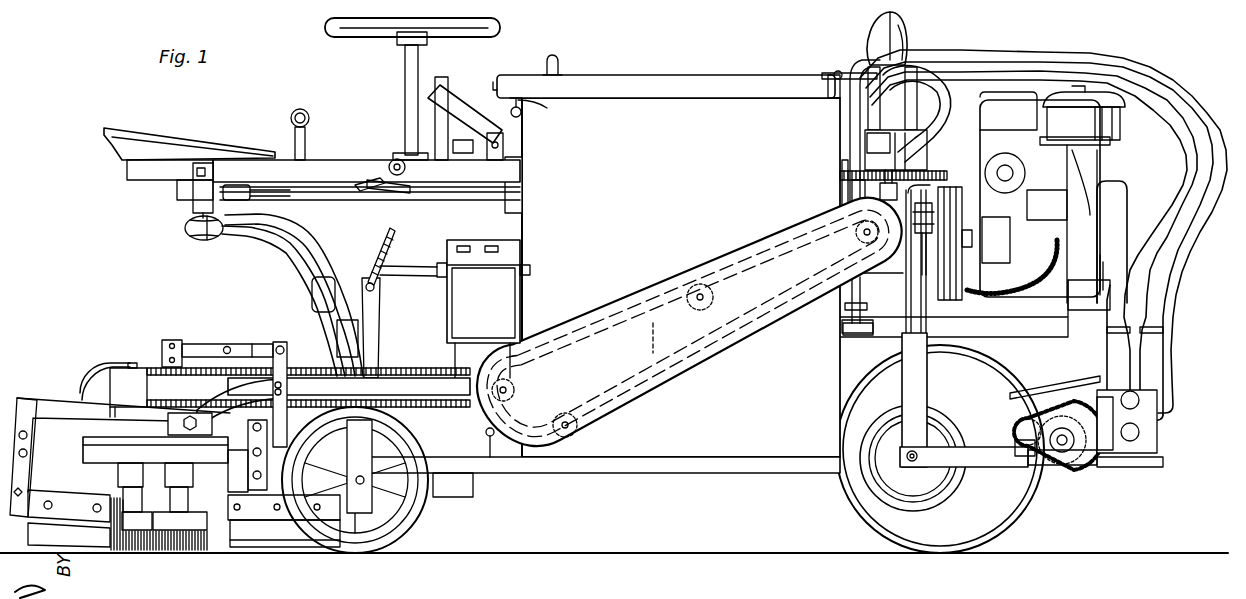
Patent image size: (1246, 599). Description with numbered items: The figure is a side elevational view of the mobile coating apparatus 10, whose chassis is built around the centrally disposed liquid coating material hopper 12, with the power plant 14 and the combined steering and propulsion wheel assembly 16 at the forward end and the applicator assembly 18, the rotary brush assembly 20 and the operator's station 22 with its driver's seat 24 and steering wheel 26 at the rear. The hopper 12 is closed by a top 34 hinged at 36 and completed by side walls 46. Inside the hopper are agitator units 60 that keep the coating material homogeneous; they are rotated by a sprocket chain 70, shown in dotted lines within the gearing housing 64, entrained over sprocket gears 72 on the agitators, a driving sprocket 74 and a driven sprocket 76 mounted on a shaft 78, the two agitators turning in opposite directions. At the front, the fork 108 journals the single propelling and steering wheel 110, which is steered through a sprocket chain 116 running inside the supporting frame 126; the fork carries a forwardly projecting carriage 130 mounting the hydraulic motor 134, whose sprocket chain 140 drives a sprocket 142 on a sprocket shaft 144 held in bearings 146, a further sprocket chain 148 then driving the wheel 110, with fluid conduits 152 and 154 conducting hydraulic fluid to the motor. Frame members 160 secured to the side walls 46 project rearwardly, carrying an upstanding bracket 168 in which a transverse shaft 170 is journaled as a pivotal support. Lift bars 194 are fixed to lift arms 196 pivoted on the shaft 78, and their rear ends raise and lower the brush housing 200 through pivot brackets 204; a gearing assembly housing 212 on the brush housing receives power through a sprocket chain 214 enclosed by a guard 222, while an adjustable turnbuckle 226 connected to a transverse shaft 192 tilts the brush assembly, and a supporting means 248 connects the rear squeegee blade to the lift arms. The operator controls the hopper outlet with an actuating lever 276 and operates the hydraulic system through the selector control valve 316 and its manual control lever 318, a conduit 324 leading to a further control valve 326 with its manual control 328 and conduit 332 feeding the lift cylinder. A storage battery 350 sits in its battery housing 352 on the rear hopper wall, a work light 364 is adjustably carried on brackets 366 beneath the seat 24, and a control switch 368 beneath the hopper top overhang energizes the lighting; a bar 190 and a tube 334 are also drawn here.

The apparatus 10 is at (735, 72).
The liquid coating material hopper 12 is at (681, 275).
The power plant 14 is at (1106, 171).
The combined steering and propulsion wheel assembly 16 is at (957, 374).
The applicator assembly 18 is at (330, 553).
The rotary brush assembly 20 is at (201, 551).
The operator's station 22 is at (348, 158).
The driver's seat 24 is at (148, 150).
The steering wheel 26 is at (370, 25).
The top or closure 34 is at (590, 88).
The hinge 36 is at (836, 71).
The side walls 46 is at (655, 117).
The agitator units 60 is at (697, 280).
The gearing housing 64 is at (689, 322).
The sprocket chain 70 is at (644, 348).
The sprocket gears 72 is at (711, 290).
The driving sprocket 74 is at (858, 227).
The driven sprocket 76 is at (507, 380).
The shaft 78 is at (513, 393).
The fork 108 is at (923, 392).
The propelling and steering wheel 110 is at (837, 488).
The sprocket chain 116 is at (962, 162).
The supporting frame 126 is at (163, 170).
The carriage 130 is at (993, 455).
The hydraulic motor 134 is at (1147, 427).
The sprocket chain 140 is at (1085, 397).
The sprocket 142 is at (1060, 412).
The sprocket shaft 144 is at (1062, 442).
The bearings 146 is at (1017, 443).
The sprocket chain 148 is at (1027, 418).
The fluid conduit 152 is at (1130, 267).
The fluid conduit 154 is at (1160, 293).
The frame members 160 is at (527, 460).
The upstanding bracket 168 is at (492, 443).
The transverse shaft 170 is at (487, 436).
The brush support bar 190 is at (280, 380).
The transverse shaft 192 is at (283, 350).
The lift bars 194 is at (277, 367).
The lift arms 196 is at (383, 390).
The brush housing 200 is at (100, 452).
The pivot brackets 204 is at (203, 428).
The gearing assembly housing 212 is at (123, 372).
The sprocket chain 214 is at (203, 367).
The shield or guard enclosure 222 is at (77, 392).
The adjustable turnbuckle 226 is at (228, 350).
The supporting means 248 is at (248, 452).
The actuating lever 276 is at (467, 117).
The control valve 316 is at (880, 143).
The manual control lever 318 is at (445, 77).
The conduit 324 is at (445, 197).
The control valve 326 is at (272, 208).
The manual control means 328 is at (293, 133).
The conduit 332 is at (317, 252).
The control tube 334 is at (275, 250).
The electrical storage battery 350 is at (510, 295).
The battery housing 352 is at (460, 322).
The work light 364 is at (185, 230).
The brackets 366 is at (207, 193).
The control switch 368 is at (517, 102).